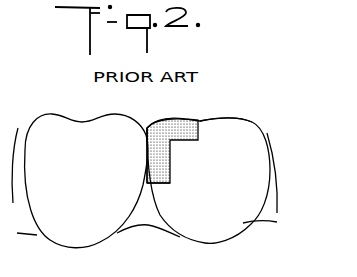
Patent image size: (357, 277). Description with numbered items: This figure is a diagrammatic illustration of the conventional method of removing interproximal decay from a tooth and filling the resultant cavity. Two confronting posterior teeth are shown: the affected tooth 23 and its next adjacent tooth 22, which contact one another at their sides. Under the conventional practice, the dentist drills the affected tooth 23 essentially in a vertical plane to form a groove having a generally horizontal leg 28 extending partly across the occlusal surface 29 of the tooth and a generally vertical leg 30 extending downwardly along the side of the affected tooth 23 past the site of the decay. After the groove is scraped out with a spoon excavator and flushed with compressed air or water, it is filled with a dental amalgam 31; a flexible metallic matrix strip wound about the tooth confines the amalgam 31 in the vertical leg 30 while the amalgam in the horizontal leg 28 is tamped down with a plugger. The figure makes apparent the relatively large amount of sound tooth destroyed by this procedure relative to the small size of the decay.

The tooth 22 is at (97, 233).
The affected tooth 23 is at (240, 207).
The horizontal leg 28 is at (185, 142).
The occlusal surface 29 is at (226, 119).
The vertical leg 30 is at (163, 176).
The dental amalgam 31 is at (145, 153).